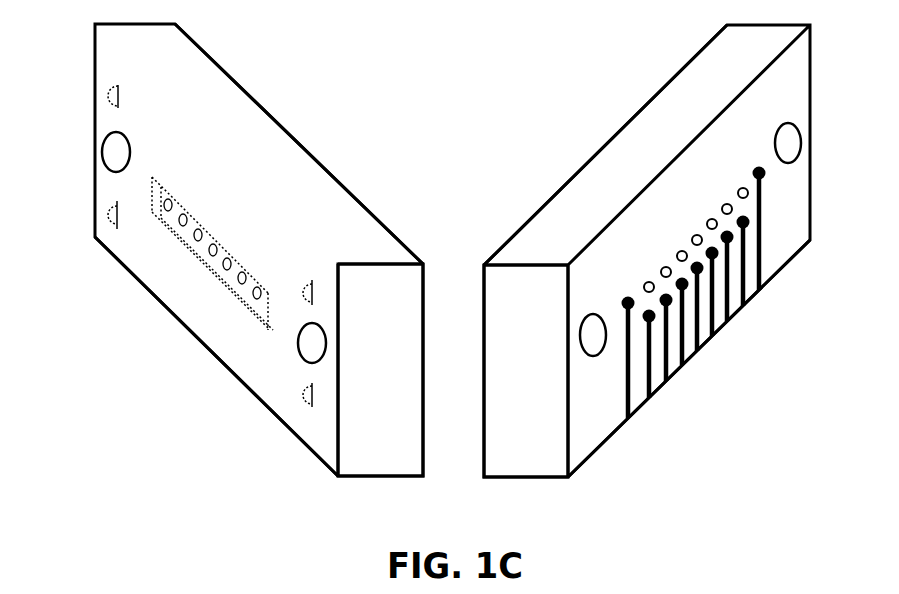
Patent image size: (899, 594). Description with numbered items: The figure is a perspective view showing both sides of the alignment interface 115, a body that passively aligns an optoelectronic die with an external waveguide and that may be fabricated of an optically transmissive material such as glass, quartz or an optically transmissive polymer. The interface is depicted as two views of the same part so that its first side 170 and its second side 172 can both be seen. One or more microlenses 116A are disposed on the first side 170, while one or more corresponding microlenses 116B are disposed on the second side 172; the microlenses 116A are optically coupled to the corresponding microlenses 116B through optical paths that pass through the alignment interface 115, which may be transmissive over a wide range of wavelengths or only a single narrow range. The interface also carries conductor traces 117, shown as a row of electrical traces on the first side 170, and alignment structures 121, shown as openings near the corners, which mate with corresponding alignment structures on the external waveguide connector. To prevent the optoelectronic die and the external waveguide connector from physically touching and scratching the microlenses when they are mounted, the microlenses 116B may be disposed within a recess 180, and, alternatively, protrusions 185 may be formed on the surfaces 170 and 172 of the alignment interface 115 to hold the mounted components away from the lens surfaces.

The alignment interface 115 is at (397, 372).
The microlenses 116A is at (675, 203).
The microlenses 116B is at (192, 218).
The conductor traces 117 is at (652, 377).
The alignment structures 121 is at (104, 141).
The first side 170 is at (593, 442).
The second side 172 is at (323, 435).
The recess 180 is at (217, 278).
The protrusions 185 is at (108, 93).